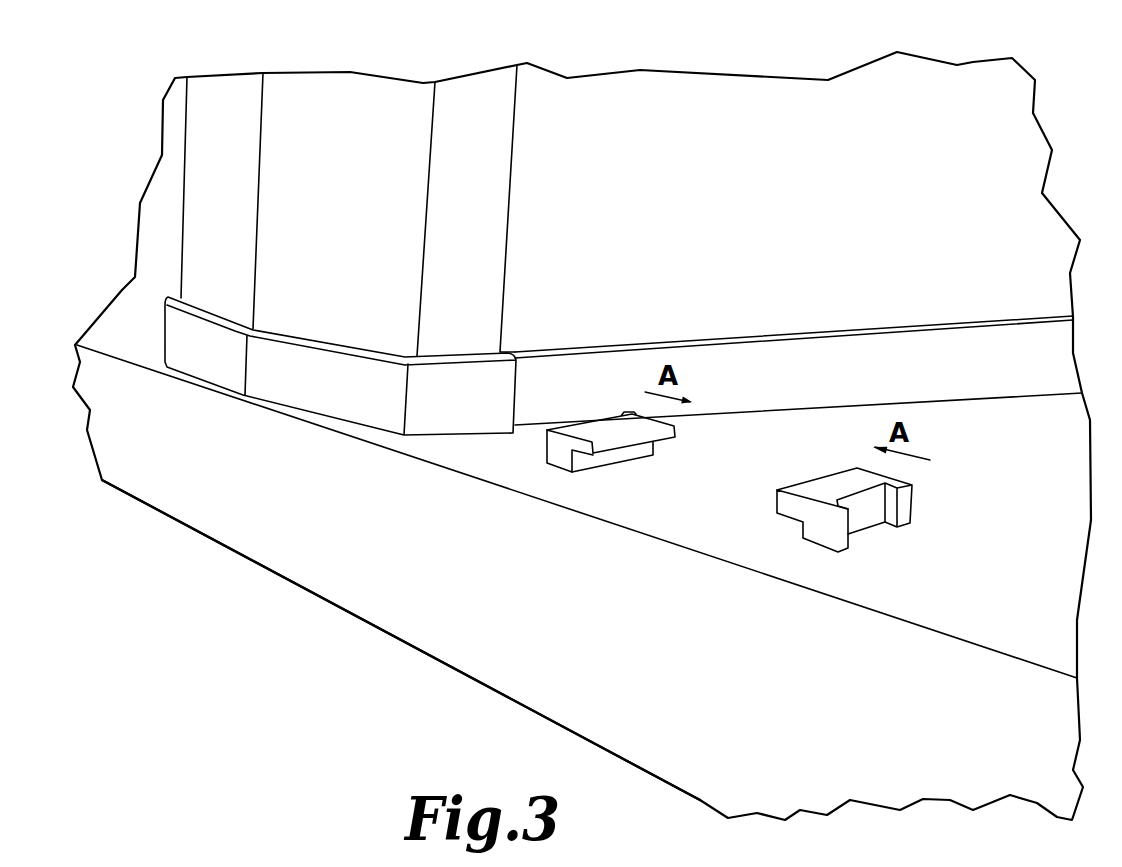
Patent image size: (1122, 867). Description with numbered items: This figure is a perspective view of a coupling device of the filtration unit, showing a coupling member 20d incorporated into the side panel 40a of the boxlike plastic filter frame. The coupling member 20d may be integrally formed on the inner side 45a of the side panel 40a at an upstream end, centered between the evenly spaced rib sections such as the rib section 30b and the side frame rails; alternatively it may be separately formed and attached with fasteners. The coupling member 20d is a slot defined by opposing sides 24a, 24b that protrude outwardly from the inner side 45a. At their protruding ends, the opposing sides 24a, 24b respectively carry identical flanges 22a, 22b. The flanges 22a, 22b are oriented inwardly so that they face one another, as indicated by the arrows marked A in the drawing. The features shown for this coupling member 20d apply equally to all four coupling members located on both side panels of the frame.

The coupling member 20d is at (776, 440).
The flange 22a is at (785, 503).
The flange 22b is at (628, 445).
The opposing side 24a is at (820, 535).
The opposing side 24b is at (558, 463).
The rib section 30b is at (431, 418).
The side panel 40a is at (667, 762).
The inner side 45a is at (947, 615).